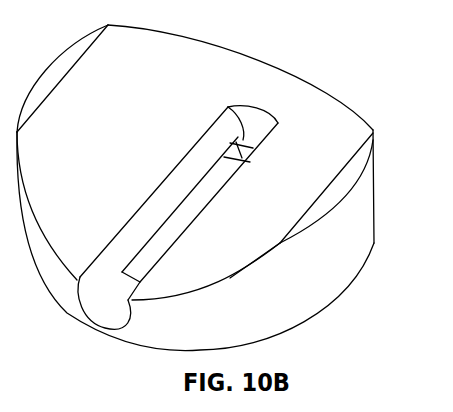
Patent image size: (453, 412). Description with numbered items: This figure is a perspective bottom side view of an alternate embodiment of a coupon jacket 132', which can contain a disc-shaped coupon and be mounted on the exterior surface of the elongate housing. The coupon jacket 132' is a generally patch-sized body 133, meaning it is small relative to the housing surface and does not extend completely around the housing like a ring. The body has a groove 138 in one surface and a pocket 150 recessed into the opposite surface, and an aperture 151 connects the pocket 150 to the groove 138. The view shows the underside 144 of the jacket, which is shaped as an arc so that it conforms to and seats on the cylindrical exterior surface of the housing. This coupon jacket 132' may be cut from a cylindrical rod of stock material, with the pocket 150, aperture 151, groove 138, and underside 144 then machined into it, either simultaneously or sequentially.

The coupon jacket 132' is at (217, 188).
The underside 144 is at (162, 77).
The patch-sized body 133 is at (293, 299).
The aperture 151 is at (177, 207).
The pocket 150 is at (229, 123).
The groove 138 is at (118, 262).